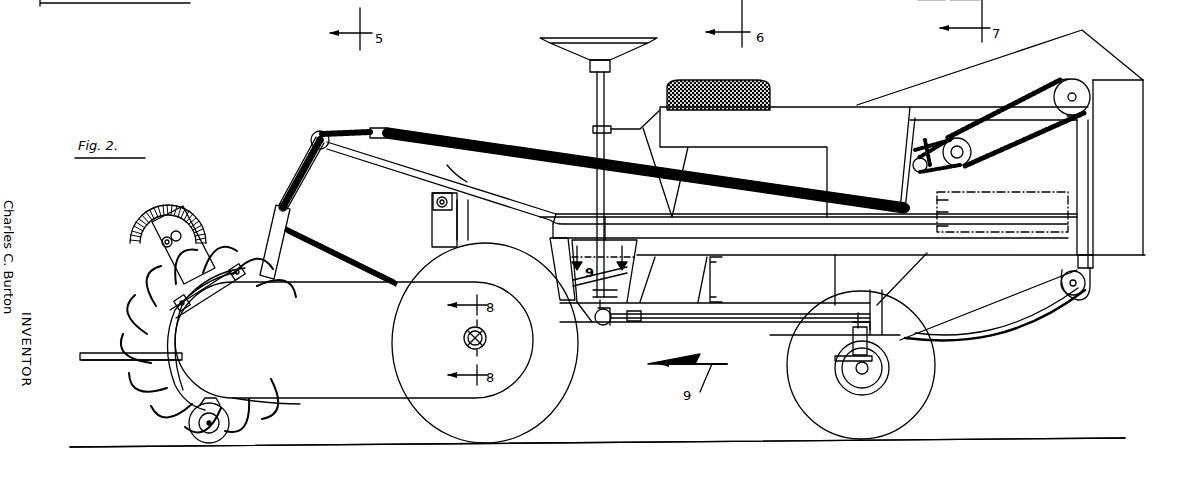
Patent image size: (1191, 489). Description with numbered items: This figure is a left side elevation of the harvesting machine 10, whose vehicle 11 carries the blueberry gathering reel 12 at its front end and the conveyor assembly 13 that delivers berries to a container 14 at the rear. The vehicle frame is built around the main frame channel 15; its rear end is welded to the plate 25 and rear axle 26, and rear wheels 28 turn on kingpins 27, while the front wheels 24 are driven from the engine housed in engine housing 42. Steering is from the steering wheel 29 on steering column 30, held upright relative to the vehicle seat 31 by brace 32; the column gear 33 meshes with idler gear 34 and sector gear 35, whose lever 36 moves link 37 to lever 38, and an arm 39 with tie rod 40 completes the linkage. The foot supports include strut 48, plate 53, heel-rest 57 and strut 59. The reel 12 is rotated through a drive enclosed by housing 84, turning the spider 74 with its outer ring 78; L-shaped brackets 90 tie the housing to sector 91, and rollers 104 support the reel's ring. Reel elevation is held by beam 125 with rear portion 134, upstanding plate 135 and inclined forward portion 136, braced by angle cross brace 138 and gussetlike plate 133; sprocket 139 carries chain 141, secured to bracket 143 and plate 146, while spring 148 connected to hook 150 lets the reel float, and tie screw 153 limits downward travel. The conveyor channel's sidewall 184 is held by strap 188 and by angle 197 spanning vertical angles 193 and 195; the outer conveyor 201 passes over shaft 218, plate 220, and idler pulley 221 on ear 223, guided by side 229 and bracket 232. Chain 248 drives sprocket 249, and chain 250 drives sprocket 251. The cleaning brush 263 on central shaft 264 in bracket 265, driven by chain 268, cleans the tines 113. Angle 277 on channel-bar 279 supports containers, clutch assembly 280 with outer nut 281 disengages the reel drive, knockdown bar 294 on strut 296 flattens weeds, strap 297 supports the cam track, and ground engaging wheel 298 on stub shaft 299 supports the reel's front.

The harvesting machine 10 is at (487, 88).
The vehicle 11 is at (738, 326).
The blueberry gathering reel 12 is at (142, 302).
The conveyor assembly 13 is at (1122, 60).
The container 14 is at (1070, 222).
The main frame channel 15 is at (763, 322).
The front wheel 24 is at (550, 402).
The plate 25 is at (880, 312).
The rear axle 26 is at (880, 355).
The kingpin 27 is at (882, 375).
The rear wheel 28 is at (918, 402).
The steering wheel 29 is at (580, 40).
The steering column 30 is at (596, 88).
The vehicle seat 31 is at (725, 90).
The brace 32 is at (615, 127).
The gear 33 is at (598, 330).
The idler gear 34 is at (620, 286).
The sector gear 35 is at (619, 298).
The lever 36 is at (606, 326).
The link 37 is at (690, 321).
The lever 38 is at (852, 326).
The arm 39 is at (845, 385).
The tie rod 40 is at (832, 373).
The engine housing 42 is at (838, 108).
The strut 48 is at (460, 225).
The plate 53 is at (452, 176).
The heel-rest 57 is at (578, 216).
The strut 59 is at (556, 275).
The spider 74 is at (170, 421).
The outer ring 78 is at (300, 410).
The housing 84 is at (370, 398).
The L-shaped bracket 90 is at (208, 290).
The sector 91 is at (250, 283).
The roller 104 is at (930, 7).
The tines 113 is at (155, 392).
The beam 125 is at (722, 215).
The gussetlike plate 133 is at (985, 330).
The rear portion 134 is at (945, 214).
The upstanding plate 135 is at (945, 228).
The forward portion 136 is at (378, 164).
The angle cross brace 138 is at (425, 189).
The sprocket 139 is at (317, 131).
The chain 141 is at (345, 126).
The bracket 143 is at (282, 204).
The plate 146 is at (274, 225).
The spring 148 is at (505, 144).
The hook 150 is at (945, 201).
The tie screw 153 is at (305, 190).
The sidewall 184 is at (1085, 45).
The strap 188 is at (432, 223).
The vertical angle 193 is at (1088, 162).
The vertical angle 195 is at (902, 186).
The angle 197 is at (928, 106).
The outer conveyor 201 is at (1050, 325).
The shaft 218 is at (1091, 97).
The plate 220 is at (1143, 175).
The idler pulley 221 is at (1088, 283).
The ear 223 is at (1092, 298).
The side 229 is at (608, 232).
The bracket 232 is at (972, 160).
The chain 248 is at (1020, 90).
The sprocket 249 is at (1072, 80).
The chain 250 is at (926, 172).
The sprocket 251 is at (966, 170).
The cleaning brush 263 is at (138, 222).
The central shaft 264 is at (167, 238).
The bracket 265 is at (183, 245).
The chain 268 is at (355, 265).
The angle 277 is at (797, 250).
The channel-bar 279 is at (718, 280).
The clutch assembly 280 is at (462, 340).
The outer nut 281 is at (489, 333).
The knockdown bar 294 is at (97, 350).
The strut 296 is at (97, 361).
The L-shaped strap 297 is at (982, 0).
The ground engaging wheel 298 is at (232, 404).
The stub shaft 299 is at (210, 422).